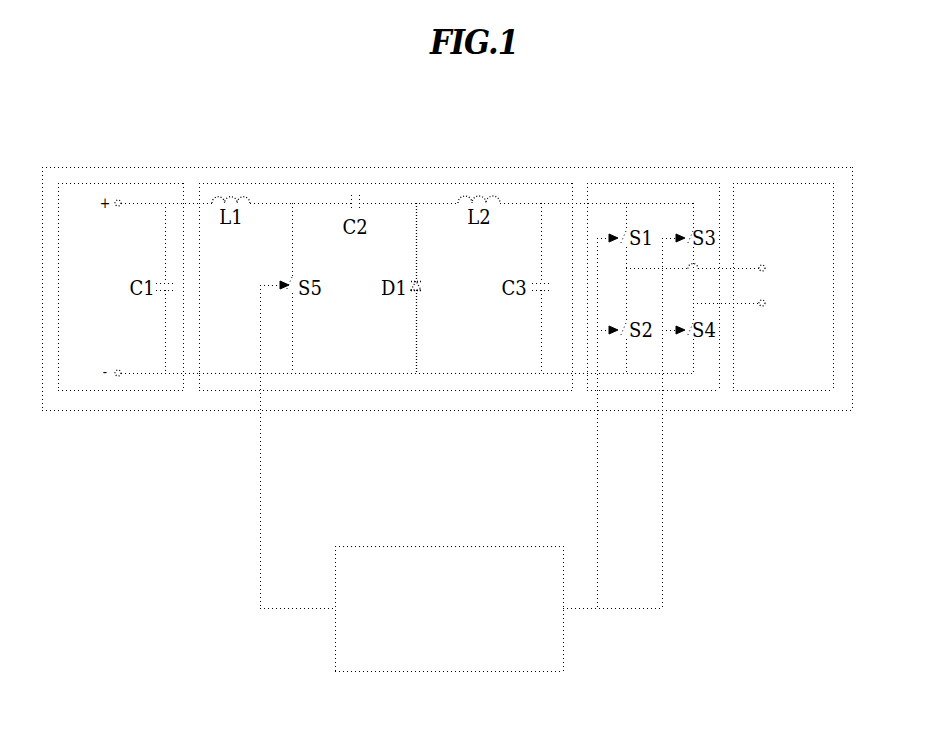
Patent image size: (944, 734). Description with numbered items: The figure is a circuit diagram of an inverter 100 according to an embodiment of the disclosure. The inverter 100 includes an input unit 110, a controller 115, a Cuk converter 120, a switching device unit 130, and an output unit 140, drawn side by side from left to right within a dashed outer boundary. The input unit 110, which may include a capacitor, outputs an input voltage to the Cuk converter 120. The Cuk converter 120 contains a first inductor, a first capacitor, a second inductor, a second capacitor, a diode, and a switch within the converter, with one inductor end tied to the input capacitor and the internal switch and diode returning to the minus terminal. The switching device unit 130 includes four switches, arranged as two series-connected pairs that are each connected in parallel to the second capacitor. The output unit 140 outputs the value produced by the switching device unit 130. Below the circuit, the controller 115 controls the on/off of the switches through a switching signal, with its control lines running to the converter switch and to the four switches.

The inverter 100 is at (512, 167).
The input unit 110 is at (122, 183).
The controller 115 is at (448, 546).
The Cuk converter 120 is at (385, 183).
The switching device unit 130 is at (650, 183).
The output unit 140 is at (782, 183).